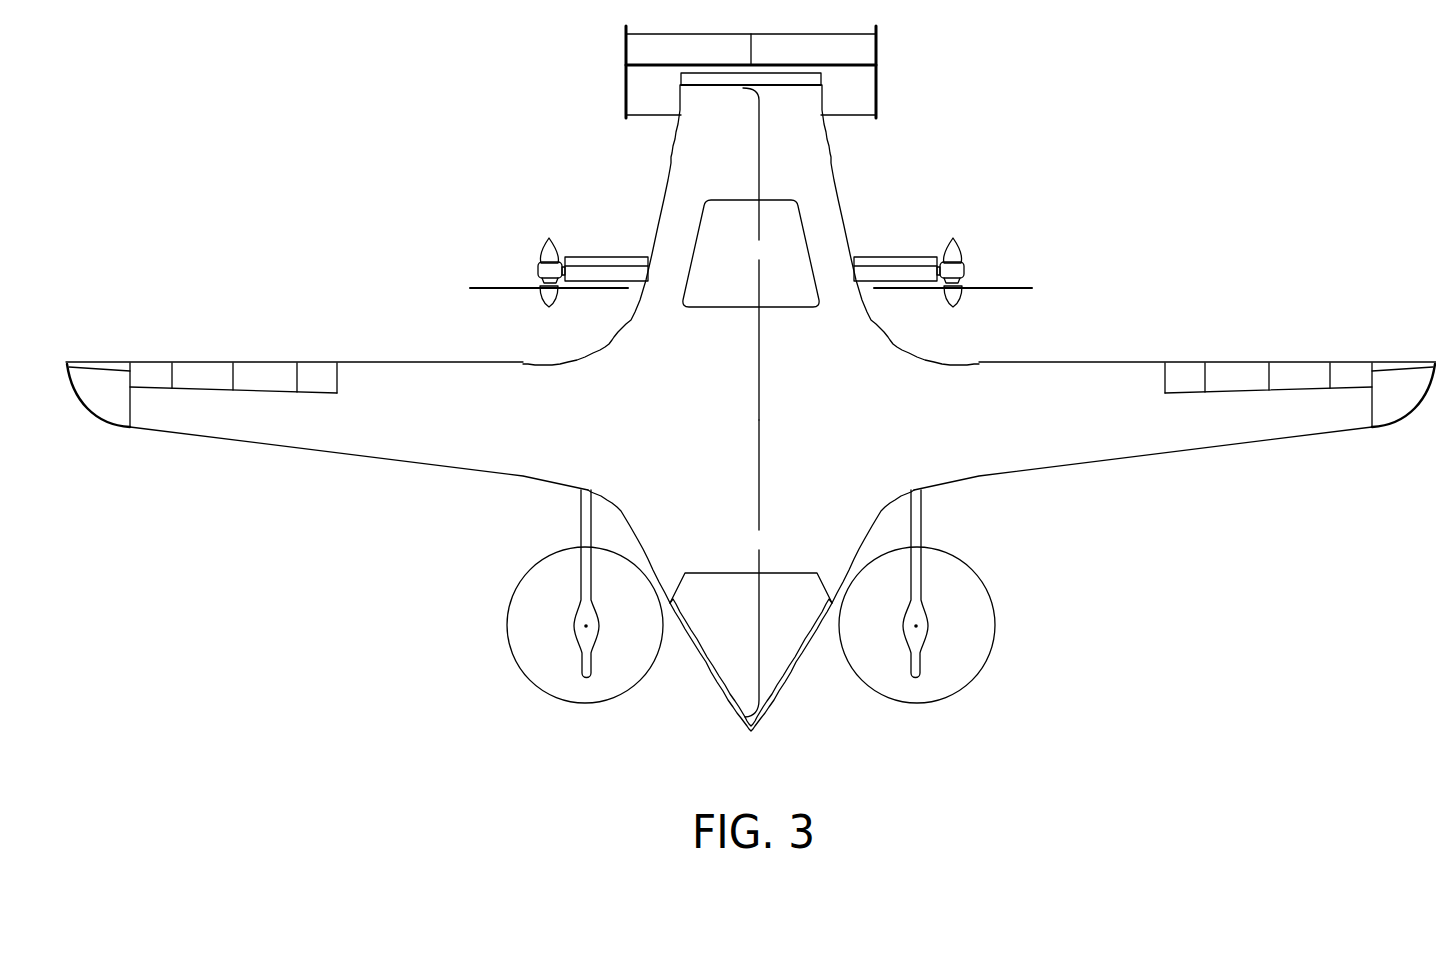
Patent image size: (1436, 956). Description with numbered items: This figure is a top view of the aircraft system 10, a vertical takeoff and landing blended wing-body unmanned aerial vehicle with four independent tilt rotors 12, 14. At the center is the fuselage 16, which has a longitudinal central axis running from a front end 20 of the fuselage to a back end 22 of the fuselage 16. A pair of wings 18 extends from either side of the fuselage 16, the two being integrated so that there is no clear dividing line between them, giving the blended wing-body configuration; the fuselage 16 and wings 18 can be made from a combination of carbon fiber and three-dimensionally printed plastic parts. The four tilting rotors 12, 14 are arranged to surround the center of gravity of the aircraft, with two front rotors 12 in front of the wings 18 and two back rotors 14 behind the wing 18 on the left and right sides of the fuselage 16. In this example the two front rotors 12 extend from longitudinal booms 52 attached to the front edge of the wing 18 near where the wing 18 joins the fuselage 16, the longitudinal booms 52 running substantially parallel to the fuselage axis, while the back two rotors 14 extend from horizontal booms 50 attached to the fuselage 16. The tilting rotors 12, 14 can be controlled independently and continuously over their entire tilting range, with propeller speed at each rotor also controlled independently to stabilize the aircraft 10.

The aircraft system 10 is at (385, 116).
The front rotor 12 is at (580, 631).
The back rotor 14 is at (545, 248).
The fuselage 16 is at (723, 407).
The wing 18 is at (376, 423).
The front end of the fuselage 20 is at (759, 530).
The back end of the fuselage 22 is at (759, 240).
The horizontal boom 50 is at (607, 262).
The longitudinal boom 52 is at (580, 515).